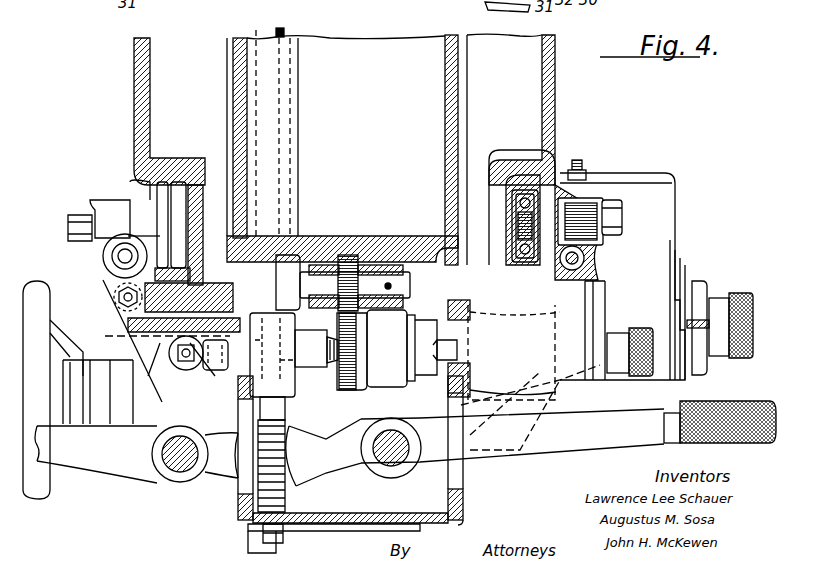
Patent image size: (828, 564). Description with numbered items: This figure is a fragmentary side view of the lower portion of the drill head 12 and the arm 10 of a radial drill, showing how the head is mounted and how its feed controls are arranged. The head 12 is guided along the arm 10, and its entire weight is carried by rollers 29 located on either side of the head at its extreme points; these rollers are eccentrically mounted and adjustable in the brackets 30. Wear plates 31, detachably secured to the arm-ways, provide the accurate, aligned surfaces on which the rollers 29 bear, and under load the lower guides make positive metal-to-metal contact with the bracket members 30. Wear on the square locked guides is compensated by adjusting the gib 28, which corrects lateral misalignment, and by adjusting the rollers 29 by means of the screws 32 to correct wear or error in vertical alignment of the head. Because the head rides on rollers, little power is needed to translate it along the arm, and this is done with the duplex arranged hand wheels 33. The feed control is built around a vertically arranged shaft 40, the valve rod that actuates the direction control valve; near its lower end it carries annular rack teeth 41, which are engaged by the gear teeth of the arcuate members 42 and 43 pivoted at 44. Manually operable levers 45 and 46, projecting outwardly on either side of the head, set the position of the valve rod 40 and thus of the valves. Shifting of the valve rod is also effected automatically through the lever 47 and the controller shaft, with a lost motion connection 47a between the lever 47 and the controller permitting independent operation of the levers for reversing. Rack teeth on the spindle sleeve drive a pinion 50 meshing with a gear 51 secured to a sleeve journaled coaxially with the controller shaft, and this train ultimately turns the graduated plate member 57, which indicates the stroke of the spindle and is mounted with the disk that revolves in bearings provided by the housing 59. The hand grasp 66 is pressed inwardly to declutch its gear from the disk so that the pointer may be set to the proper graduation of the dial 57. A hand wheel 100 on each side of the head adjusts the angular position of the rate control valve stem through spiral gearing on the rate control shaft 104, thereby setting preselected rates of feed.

The arm 10 is at (134, 84).
The drill head 12 is at (440, 35).
The gib 28 is at (122, 297).
The rollers 29 is at (193, 185).
The brackets 30 is at (115, 200).
The wear plates 31 is at (520, 272).
The screws 32 is at (118, 258).
The hand wheels 33 is at (50, 495).
The shaft 40 is at (290, 33).
The rack teeth 41 is at (285, 428).
The arcuate member 42 is at (323, 452).
The arcuate member 43 is at (232, 478).
The pivot 44 is at (178, 470).
The lever 45 is at (512, 414).
The lever 46 is at (96, 454).
The lever 47 is at (182, 372).
The lost motion connection 47a is at (220, 370).
The pinion 50 is at (348, 262).
The gear 51 is at (348, 385).
The plate member 57 is at (700, 284).
The housing 59 is at (650, 182).
The hand grasp 66 is at (757, 290).
The hand wheel 100 is at (648, 328).
The rate control shaft 104 is at (443, 347).